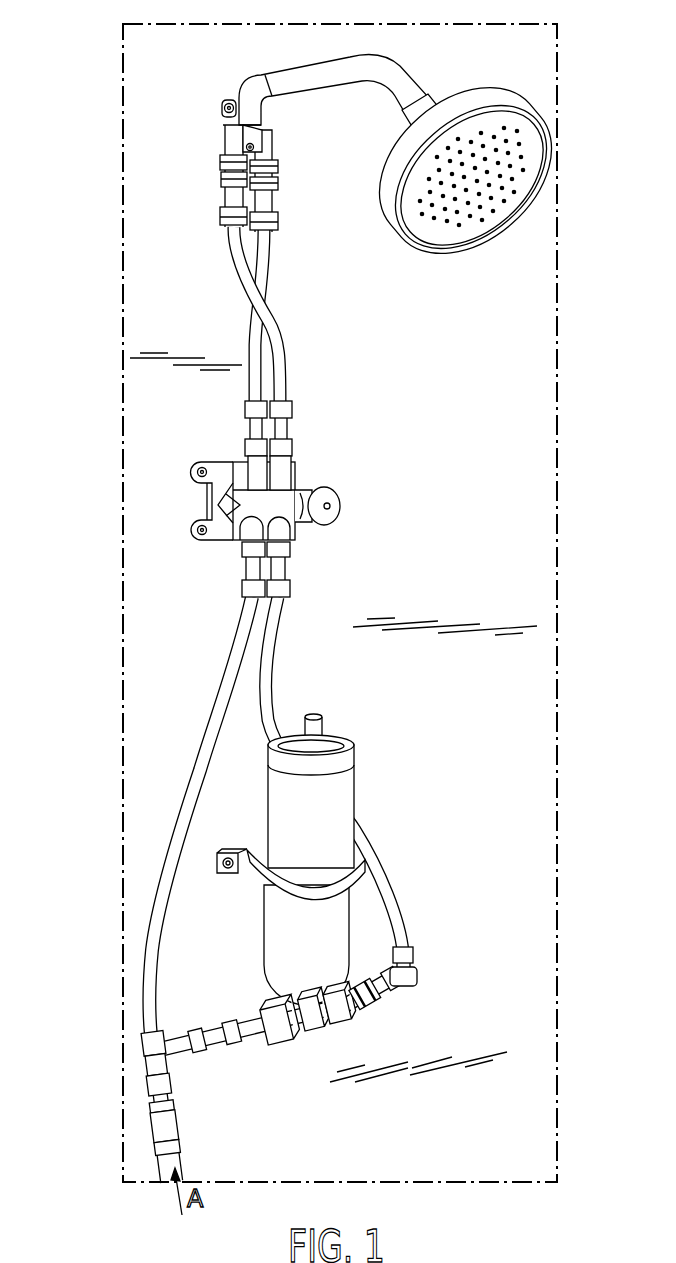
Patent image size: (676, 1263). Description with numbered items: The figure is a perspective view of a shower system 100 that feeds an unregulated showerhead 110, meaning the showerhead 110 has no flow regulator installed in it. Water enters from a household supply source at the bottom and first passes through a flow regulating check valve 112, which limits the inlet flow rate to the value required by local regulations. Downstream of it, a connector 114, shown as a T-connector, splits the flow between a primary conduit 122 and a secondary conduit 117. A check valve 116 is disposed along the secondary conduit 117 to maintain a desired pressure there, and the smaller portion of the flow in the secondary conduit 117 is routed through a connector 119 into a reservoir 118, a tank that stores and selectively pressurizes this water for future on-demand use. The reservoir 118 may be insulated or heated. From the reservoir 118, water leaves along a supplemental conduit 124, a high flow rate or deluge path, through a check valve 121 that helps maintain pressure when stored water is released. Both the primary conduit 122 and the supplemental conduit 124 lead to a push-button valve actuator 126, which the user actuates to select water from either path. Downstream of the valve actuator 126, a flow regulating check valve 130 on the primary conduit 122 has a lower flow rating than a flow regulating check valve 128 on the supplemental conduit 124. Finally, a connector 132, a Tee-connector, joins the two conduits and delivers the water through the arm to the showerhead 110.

The shower system 100 is at (155, 80).
The showerhead 110 is at (477, 97).
The flow regulating check valve 112 is at (172, 1150).
The connector 114 is at (157, 1062).
The check valve 116 is at (218, 1050).
The secondary conduit 117 is at (239, 1030).
The reservoir 118 is at (283, 807).
The connector 119 is at (312, 1032).
The check valve 121 is at (380, 988).
The primary conduit 122 is at (255, 360).
The supplemental conduit 124 is at (270, 353).
The valve actuator 126 is at (240, 506).
The flow regulating check valve 128 is at (227, 168).
The flow regulating check valve 130 is at (267, 172).
The connector 132 is at (248, 112).